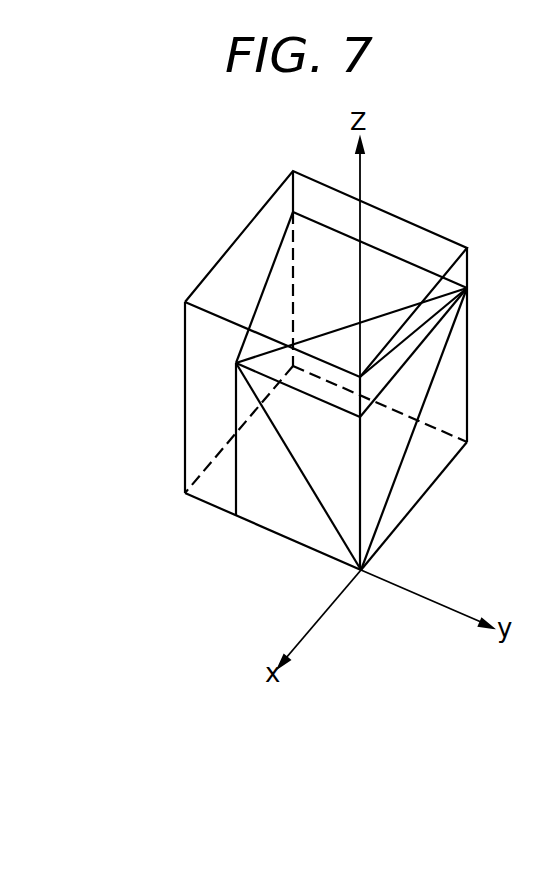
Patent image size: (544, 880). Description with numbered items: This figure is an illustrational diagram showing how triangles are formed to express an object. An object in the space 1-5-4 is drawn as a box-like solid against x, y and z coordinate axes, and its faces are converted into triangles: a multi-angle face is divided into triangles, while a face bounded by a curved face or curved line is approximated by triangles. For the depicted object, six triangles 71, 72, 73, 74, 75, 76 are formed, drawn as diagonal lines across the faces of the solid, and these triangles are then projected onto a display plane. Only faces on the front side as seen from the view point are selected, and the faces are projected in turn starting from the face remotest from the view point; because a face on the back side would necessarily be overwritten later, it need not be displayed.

The space 1-5-4 is at (206, 389).
The triangle 71 is at (383, 272).
The triangle 72 is at (443, 323).
The triangle 73 is at (471, 301).
The triangle 74 is at (458, 357).
The triangle 75 is at (347, 517).
The triangle 76 is at (282, 509).